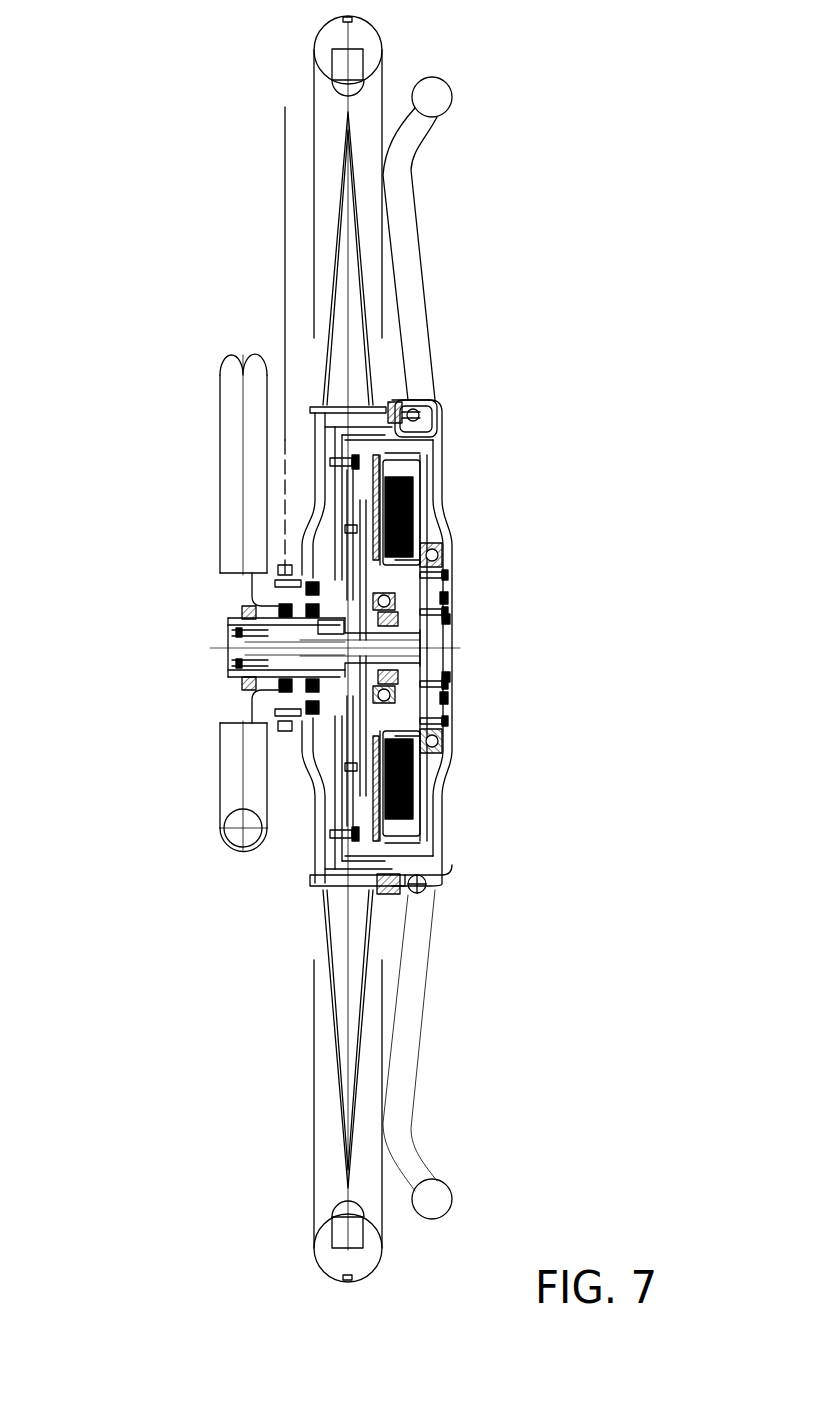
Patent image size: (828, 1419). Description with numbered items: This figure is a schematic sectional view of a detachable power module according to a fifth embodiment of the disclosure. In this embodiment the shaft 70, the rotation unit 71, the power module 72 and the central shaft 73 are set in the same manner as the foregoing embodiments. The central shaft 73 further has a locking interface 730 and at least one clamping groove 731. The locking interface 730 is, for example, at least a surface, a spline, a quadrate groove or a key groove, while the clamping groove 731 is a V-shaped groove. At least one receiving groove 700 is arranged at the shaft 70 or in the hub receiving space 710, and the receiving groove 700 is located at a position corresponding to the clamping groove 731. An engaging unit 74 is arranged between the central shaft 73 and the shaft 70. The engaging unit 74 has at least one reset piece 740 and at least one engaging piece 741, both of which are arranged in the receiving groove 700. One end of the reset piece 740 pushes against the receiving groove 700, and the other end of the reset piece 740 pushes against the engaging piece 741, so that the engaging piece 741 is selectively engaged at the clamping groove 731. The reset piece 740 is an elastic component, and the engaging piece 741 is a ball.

The shaft 70 is at (232, 678).
The rotation unit 71 is at (250, 209).
The hub receiving space 710 is at (423, 415).
The power module 72 is at (425, 493).
The central shaft 73 is at (232, 667).
The locking interface 730 is at (230, 622).
The clamping groove 731 is at (343, 645).
The receiving groove 700 is at (318, 627).
The engaging unit 74 is at (530, 643).
The reset piece 740 is at (448, 598).
The engaging piece 741 is at (448, 618).